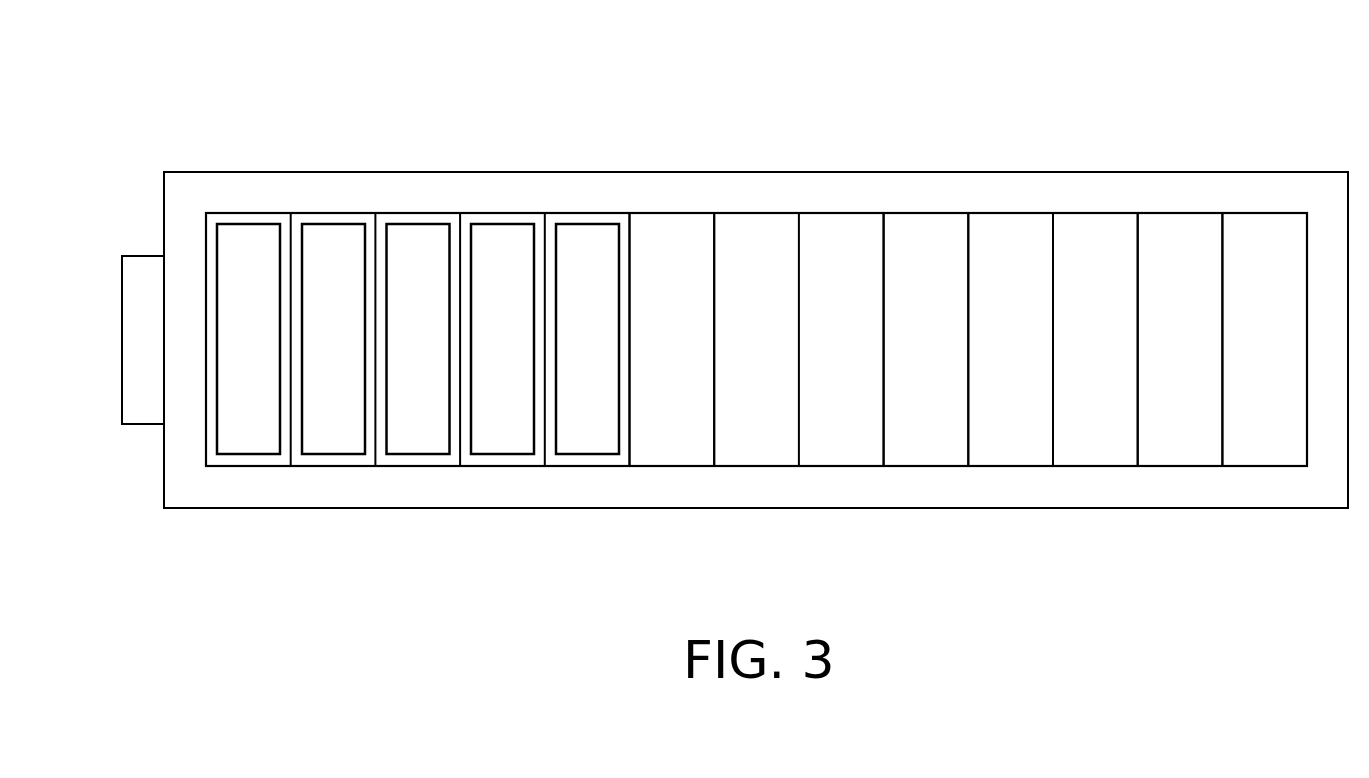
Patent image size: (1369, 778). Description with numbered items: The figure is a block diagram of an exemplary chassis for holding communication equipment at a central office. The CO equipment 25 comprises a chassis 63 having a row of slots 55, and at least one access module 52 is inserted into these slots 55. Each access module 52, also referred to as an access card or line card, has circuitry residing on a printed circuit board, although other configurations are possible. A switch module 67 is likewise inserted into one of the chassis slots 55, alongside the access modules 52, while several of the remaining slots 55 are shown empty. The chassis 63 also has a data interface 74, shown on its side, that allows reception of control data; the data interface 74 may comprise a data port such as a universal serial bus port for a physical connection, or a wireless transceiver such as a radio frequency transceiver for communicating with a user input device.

The CO equipment 25 is at (1180, 62).
The chassis 63 is at (795, 172).
The data interface 74 is at (143, 256).
The switch module 67 is at (248, 224).
The access module 52 is at (333, 224).
The slots 55 is at (665, 236).